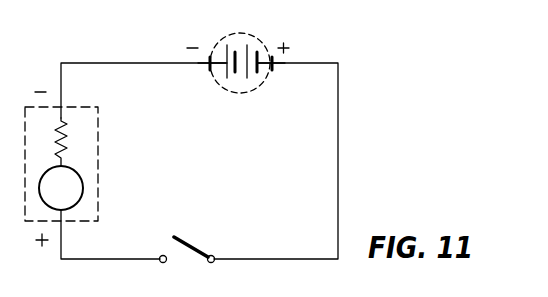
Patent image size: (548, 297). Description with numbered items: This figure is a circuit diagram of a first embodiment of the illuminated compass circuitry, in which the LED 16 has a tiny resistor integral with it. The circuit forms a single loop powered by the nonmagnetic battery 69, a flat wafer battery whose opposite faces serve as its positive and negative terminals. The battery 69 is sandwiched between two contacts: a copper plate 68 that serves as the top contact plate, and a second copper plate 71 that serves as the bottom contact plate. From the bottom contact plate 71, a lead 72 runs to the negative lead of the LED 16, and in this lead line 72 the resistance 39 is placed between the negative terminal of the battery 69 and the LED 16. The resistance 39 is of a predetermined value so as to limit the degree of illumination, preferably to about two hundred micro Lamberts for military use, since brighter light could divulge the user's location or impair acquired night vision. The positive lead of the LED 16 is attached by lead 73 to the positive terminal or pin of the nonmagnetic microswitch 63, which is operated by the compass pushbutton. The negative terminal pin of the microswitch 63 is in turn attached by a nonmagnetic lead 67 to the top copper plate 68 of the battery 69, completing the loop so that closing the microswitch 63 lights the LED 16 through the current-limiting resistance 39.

The LED 16 is at (83, 184).
The resistance 39 is at (68, 144).
The nonmagnetic microswitch 63 is at (193, 245).
The nonmagnetic lead 67 is at (339, 167).
The copper plate 68 is at (272, 68).
The nonmagnetic battery 69 is at (250, 50).
The second copper plate 71 is at (208, 70).
The lead 72 is at (110, 63).
The lead 73 is at (133, 258).